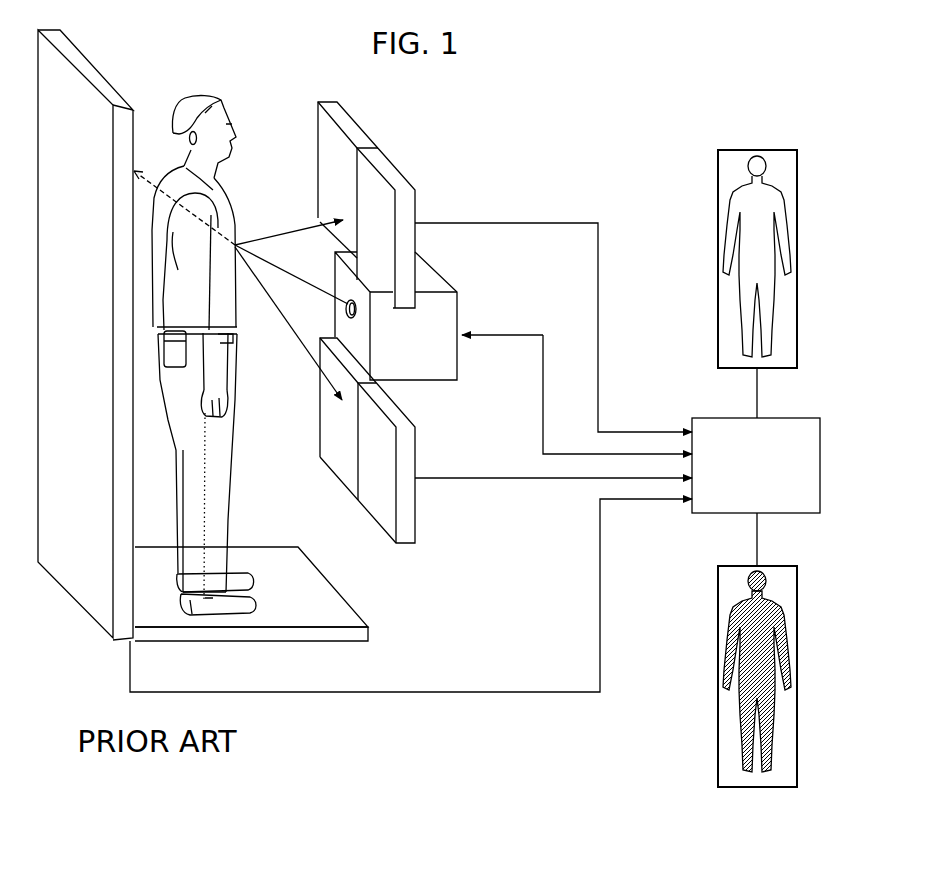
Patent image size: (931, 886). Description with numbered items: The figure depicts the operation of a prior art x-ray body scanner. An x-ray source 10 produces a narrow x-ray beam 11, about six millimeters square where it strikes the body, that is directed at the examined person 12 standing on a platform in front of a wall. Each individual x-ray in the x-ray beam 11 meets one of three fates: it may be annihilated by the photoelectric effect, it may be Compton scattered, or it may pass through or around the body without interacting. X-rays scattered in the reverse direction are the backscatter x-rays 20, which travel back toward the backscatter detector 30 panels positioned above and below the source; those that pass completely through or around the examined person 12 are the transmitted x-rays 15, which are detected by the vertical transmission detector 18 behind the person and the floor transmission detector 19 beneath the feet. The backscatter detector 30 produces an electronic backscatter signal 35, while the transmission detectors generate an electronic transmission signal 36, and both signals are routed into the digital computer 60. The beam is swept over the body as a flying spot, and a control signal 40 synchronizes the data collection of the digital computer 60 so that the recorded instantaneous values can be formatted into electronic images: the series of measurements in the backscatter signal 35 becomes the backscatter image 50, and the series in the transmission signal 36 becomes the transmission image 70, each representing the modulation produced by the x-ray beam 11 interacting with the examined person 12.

The x-ray source 10 is at (438, 262).
The x-ray beam 11 is at (281, 266).
The examined person 12 is at (229, 513).
The transmitted x-rays 15 is at (184, 195).
The vertical transmission detector 18 is at (128, 635).
The floor transmission detector 19 is at (368, 633).
The backscatter x-rays 20 is at (295, 227).
The backscatter detector 30 is at (340, 112).
The backscatter signal 35 is at (557, 219).
The transmission signal 36 is at (441, 689).
The control signal 40 is at (504, 335).
The backscatter image 50 is at (712, 221).
The digital computer 60 is at (731, 516).
The transmission image 70 is at (716, 609).